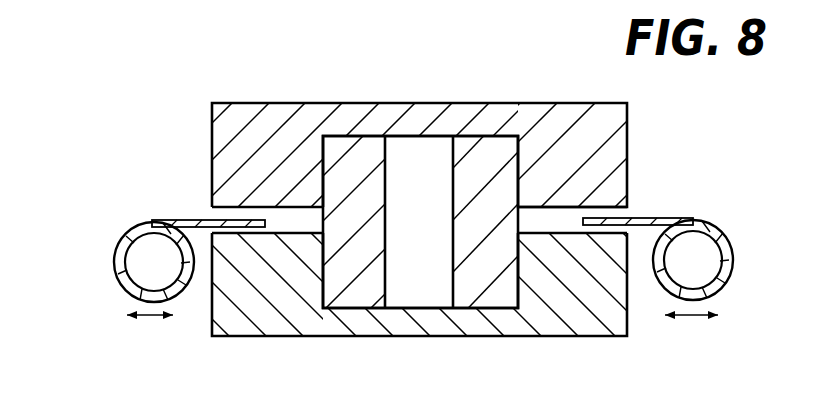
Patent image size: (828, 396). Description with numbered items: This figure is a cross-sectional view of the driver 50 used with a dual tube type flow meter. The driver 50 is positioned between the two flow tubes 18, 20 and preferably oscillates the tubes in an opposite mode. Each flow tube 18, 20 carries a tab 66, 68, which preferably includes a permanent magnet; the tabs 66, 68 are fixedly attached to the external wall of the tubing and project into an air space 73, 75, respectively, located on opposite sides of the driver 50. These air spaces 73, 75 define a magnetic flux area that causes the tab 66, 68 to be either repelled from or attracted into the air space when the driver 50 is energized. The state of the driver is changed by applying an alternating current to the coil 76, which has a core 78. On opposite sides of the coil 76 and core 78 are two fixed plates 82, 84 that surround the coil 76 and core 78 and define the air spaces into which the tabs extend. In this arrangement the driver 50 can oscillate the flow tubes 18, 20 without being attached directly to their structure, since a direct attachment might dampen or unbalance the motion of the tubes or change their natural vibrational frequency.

The driver 50 is at (262, 86).
The fixed plate 82 is at (541, 110).
The fixed plate 84 is at (573, 315).
The coil 76 is at (362, 292).
The core 78 is at (433, 292).
The air space 75 is at (283, 220).
The air space 73 is at (570, 218).
The tab 68 is at (190, 220).
The tab 66 is at (643, 218).
The flow tube 20 is at (115, 259).
The flow tube 18 is at (733, 262).